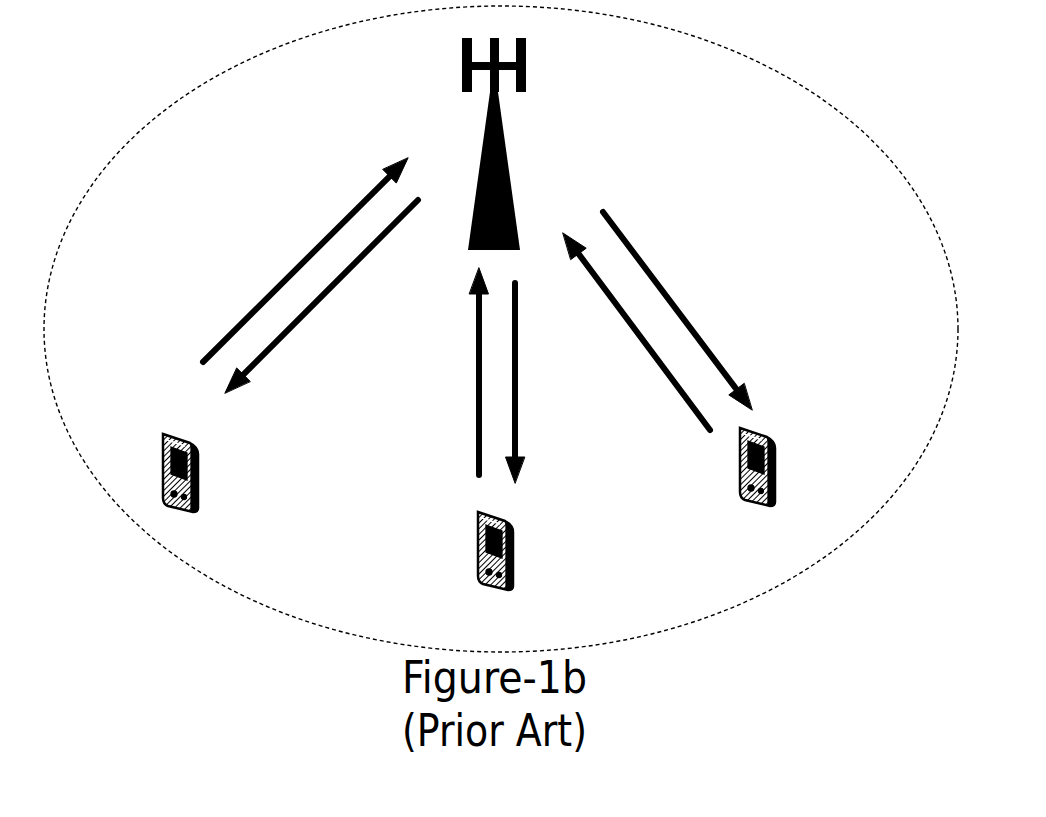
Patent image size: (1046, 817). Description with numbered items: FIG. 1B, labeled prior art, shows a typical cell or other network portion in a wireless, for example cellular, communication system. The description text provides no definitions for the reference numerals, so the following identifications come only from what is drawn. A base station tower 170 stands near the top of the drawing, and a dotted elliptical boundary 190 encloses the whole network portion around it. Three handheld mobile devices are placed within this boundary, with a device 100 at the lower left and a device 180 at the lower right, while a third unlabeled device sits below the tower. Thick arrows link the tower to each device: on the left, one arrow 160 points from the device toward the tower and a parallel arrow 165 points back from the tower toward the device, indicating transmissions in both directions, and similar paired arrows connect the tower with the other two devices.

The mobile device / user equipment 100 is at (202, 482).
The uplink transmission arrow 160 is at (288, 268).
The downlink transmission arrow 165 is at (313, 310).
The base station / eNodeB 170 is at (507, 137).
The mobile device / user equipment 180 is at (778, 457).
The cell coverage area 190 is at (750, 598).